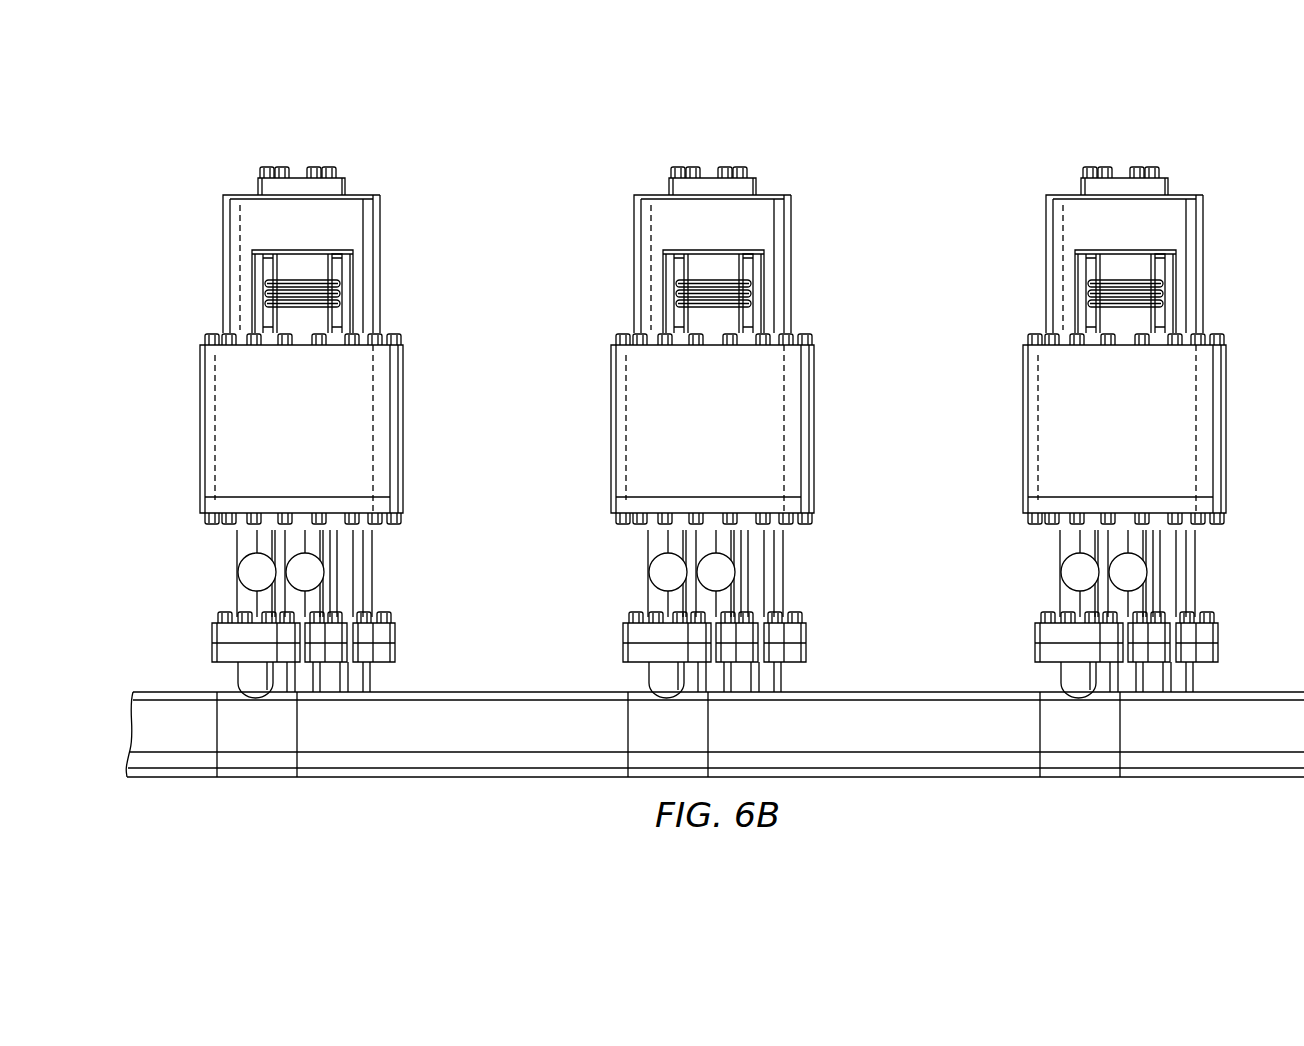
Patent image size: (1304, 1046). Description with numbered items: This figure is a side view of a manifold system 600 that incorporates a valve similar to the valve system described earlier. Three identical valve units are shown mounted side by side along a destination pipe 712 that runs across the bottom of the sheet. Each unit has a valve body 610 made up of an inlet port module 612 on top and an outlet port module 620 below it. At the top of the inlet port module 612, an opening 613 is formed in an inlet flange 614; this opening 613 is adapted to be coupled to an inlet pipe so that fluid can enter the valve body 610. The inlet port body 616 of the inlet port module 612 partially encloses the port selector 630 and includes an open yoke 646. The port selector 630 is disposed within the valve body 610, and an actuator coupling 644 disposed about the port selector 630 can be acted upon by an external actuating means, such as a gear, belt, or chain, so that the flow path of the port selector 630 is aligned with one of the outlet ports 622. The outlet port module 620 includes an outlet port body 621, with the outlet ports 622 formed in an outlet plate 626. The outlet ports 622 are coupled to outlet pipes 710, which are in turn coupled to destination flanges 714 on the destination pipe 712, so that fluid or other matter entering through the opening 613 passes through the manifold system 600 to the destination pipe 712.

The manifold system 600 is at (355, 108).
The valve body 610 is at (170, 490).
The inlet port module 612 is at (222, 232).
The opening 613 is at (298, 166).
The inlet flange 614 is at (345, 188).
The inlet port body 616 is at (380, 238).
The outlet port module 620 is at (196, 381).
The outlet port body 621 is at (405, 408).
The outlet ports 622 is at (237, 538).
The outlet plate 626 is at (405, 507).
The port selector 630 is at (335, 264).
The actuator coupling 644 is at (266, 284).
The open yoke 646 is at (351, 320).
The outlet pipes 710 is at (240, 588).
The destination pipes 712 is at (907, 779).
The pipe flange 714 is at (212, 650).